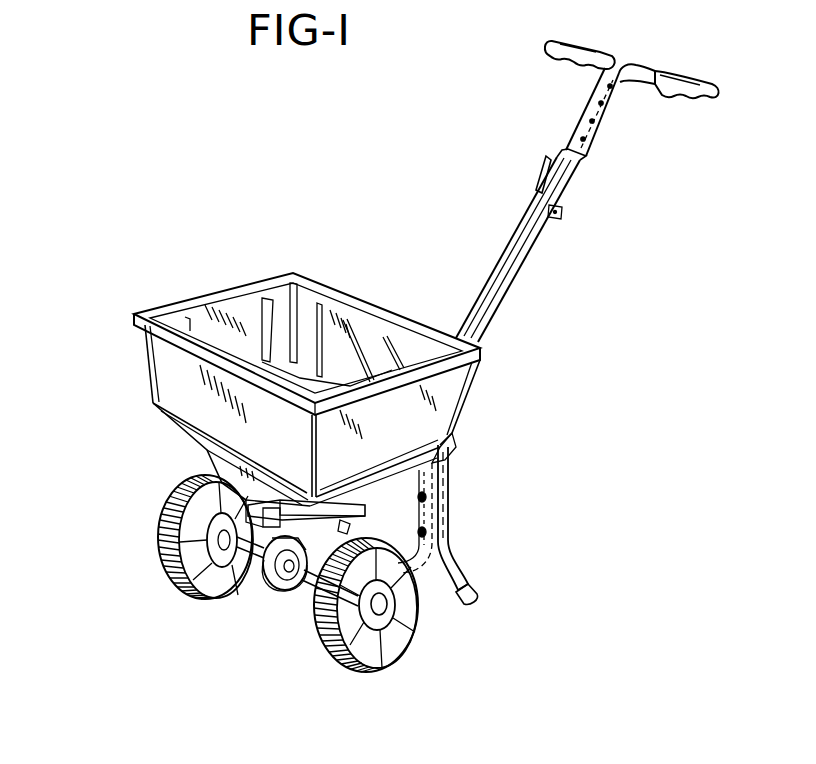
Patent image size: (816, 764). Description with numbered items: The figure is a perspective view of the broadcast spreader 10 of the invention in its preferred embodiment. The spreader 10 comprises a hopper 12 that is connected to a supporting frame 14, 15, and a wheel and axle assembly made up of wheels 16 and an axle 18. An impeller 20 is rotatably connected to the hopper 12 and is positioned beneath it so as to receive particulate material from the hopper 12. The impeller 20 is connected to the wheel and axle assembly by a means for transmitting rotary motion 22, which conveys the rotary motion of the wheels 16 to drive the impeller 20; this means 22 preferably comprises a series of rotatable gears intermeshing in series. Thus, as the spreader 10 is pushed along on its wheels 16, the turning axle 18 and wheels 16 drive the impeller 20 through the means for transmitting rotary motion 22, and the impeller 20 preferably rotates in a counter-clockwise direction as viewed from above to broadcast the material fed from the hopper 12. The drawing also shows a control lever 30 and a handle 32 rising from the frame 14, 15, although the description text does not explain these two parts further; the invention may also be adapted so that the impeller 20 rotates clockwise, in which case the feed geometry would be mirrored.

The broadcast spreader 10 is at (184, 265).
The hopper 12 is at (162, 360).
The supporting frame 14 is at (433, 469).
The supporting frame 15 is at (443, 457).
The wheels 16 is at (167, 515).
The axle 18 is at (308, 587).
The impeller 20 is at (360, 497).
The means for transmitting rotary motion 22 is at (262, 577).
The control lever 30 is at (540, 165).
The handle 32 is at (522, 268).